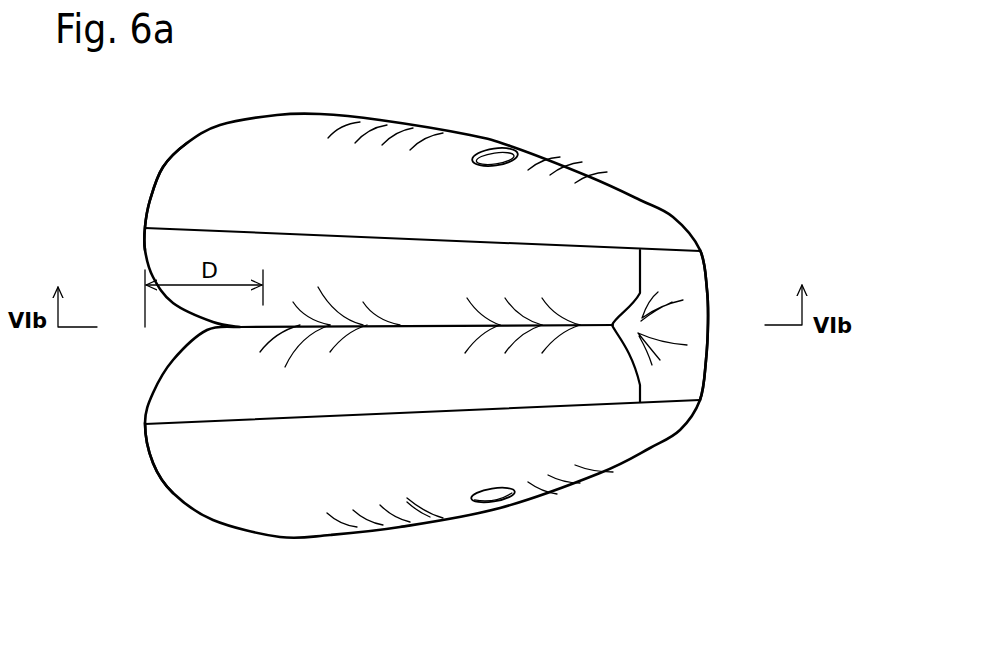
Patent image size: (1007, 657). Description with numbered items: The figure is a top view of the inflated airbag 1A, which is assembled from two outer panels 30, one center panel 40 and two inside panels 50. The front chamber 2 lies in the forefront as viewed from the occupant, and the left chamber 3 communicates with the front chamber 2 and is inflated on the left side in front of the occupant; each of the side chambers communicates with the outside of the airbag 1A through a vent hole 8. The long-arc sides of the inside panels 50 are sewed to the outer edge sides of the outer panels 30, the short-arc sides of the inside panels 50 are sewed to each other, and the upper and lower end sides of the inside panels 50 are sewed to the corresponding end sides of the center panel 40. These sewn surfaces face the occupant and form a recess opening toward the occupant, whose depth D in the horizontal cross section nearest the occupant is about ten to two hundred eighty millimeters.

The airbag 1A is at (663, 142).
The front chamber 2 is at (678, 272).
The left chamber 3 is at (392, 162).
The vent hole 8 is at (503, 142).
The outer panel 30 is at (201, 167).
The center panel 40 is at (708, 360).
The inside panel 50 is at (419, 260).